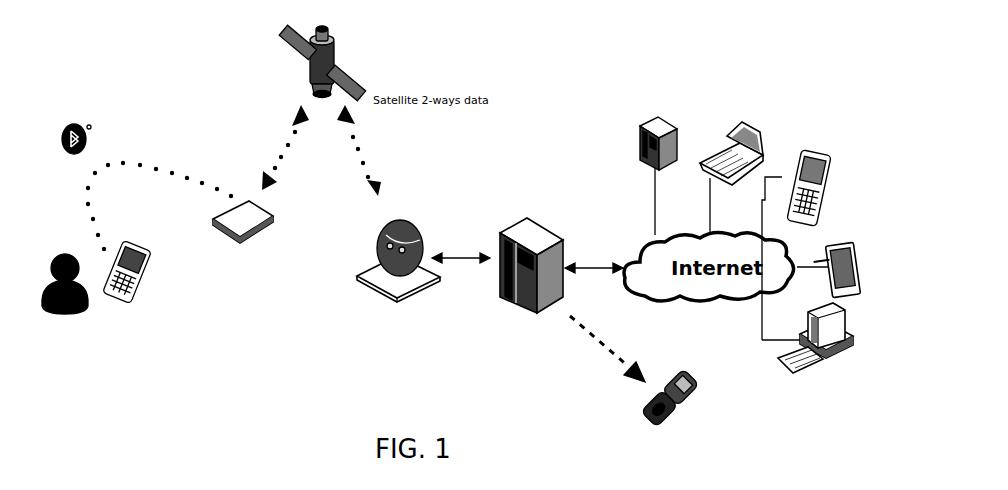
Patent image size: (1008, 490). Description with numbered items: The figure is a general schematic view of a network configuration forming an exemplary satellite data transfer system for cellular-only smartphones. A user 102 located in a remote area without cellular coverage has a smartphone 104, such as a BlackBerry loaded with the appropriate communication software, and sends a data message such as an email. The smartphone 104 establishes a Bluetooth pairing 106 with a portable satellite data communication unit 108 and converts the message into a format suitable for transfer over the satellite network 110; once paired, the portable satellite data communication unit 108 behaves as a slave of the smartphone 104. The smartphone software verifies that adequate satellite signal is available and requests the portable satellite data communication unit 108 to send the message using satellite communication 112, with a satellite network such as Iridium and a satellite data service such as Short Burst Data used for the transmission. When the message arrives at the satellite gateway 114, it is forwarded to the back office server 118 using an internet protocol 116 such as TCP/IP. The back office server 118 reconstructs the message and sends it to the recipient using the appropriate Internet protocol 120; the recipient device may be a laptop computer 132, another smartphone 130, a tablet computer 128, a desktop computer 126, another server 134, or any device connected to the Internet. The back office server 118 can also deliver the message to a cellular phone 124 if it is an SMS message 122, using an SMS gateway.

The user 102 is at (82, 310).
The smartphone 104 is at (142, 281).
The Bluetooth pairing 106 is at (174, 173).
The portable satellite data communication unit 108 is at (262, 235).
The satellite network 110 is at (336, 50).
The satellite communication 112 is at (362, 155).
The satellite gateway 114 is at (418, 221).
The internet protocol 116 is at (466, 260).
The back office server 118 is at (544, 231).
The Internet protocol 120 is at (600, 264).
The SMS message 122 is at (608, 352).
The cellular phone 124 is at (685, 412).
The desktop computer 126 is at (830, 358).
The tablet computer 128 is at (852, 245).
The smartphone 130 is at (812, 150).
The laptop computer 132 is at (752, 126).
The server 134 is at (664, 118).